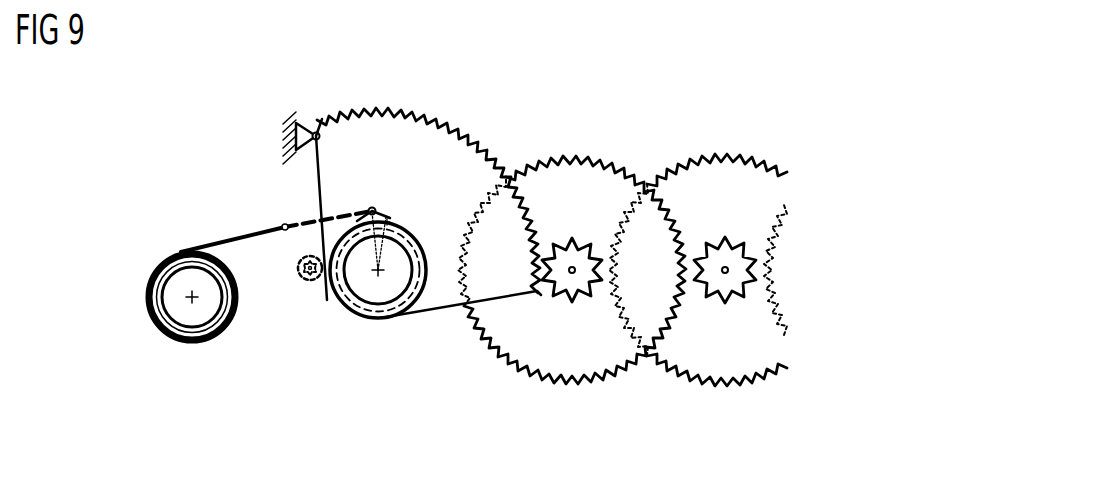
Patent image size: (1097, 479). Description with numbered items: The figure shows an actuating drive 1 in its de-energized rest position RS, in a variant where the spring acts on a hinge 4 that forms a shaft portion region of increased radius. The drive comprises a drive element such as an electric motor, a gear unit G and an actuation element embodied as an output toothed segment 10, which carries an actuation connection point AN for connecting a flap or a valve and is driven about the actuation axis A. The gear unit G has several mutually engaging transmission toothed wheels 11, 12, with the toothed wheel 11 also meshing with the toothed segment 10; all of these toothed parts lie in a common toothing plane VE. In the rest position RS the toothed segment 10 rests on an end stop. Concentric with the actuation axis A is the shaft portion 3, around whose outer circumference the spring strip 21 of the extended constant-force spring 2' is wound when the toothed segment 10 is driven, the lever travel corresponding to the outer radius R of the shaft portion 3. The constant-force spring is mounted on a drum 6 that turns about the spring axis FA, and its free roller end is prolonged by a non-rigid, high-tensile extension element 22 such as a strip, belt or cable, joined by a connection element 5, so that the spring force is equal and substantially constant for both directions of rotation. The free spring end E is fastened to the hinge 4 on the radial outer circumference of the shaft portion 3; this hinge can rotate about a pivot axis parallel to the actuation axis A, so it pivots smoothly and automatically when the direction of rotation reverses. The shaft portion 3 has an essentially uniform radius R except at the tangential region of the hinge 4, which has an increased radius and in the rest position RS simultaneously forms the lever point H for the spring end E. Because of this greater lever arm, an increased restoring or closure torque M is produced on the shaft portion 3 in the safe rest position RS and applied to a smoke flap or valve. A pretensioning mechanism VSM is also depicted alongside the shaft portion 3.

The actuating drive 1 is at (814, 84).
The extended constant-force spring 2' is at (192, 330).
The shaft portion 3 is at (346, 316).
The hinge 4 is at (372, 210).
The connection element 5 is at (284, 226).
The drum 6 is at (162, 313).
The toothed segment 10 is at (460, 122).
The transmission toothed wheel 11 is at (572, 234).
The transmission toothed wheel 12 is at (742, 157).
The spring strip 21 is at (236, 235).
The extension element 22 is at (304, 222).
The actuation axis A is at (382, 276).
The actuation connection point AN is at (378, 296).
The free spring end E is at (370, 210).
The spring axis FA is at (190, 300).
The gear unit G is at (653, 148).
The lever point H is at (387, 222).
The restoring torque M is at (438, 405).
The outer radius of the shaft portion R is at (390, 226).
The rest position RS is at (298, 128).
The toothing plane VE is at (511, 271).
The pretensioning mechanism VSM is at (310, 280).